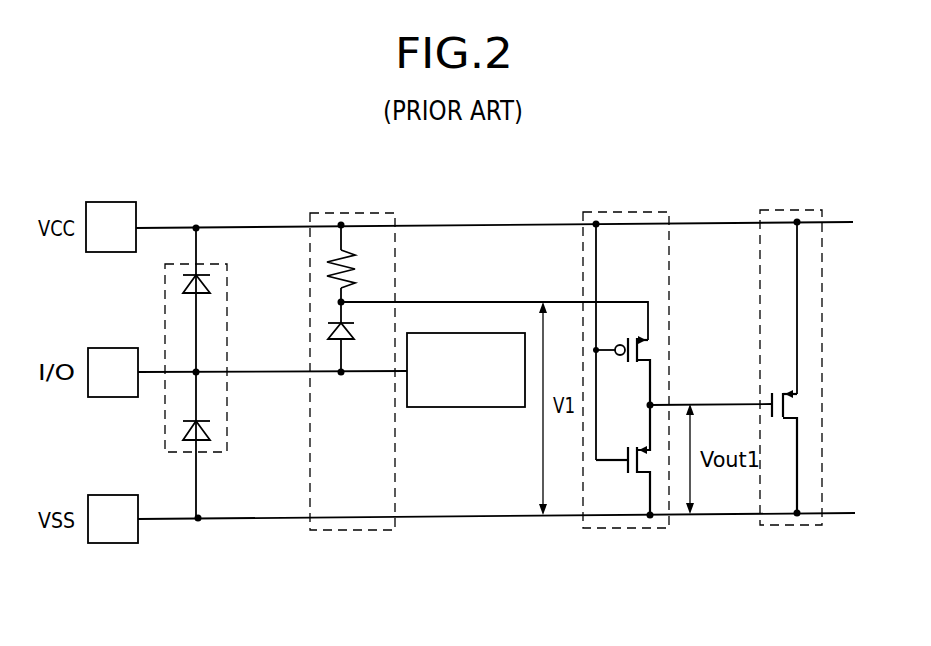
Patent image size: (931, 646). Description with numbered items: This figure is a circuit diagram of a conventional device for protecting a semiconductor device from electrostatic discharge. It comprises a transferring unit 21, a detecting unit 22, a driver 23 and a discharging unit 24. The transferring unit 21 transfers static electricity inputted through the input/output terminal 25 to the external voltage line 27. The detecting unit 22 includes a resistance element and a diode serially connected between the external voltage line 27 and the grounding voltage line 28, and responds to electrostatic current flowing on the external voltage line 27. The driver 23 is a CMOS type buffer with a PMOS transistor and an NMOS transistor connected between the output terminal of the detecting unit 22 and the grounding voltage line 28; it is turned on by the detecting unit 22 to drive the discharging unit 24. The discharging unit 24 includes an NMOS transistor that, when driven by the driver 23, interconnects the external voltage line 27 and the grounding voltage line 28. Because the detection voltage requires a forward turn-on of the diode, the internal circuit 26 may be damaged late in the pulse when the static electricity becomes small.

The transferring unit 21 is at (228, 280).
The detecting unit 22 is at (333, 213).
The driver 23 is at (622, 212).
The discharging unit 24 is at (783, 210).
The input/output terminal 25 is at (113, 397).
The internal circuit 26 is at (450, 407).
The external voltage line 27 is at (167, 227).
The grounding voltage line 28 is at (165, 520).